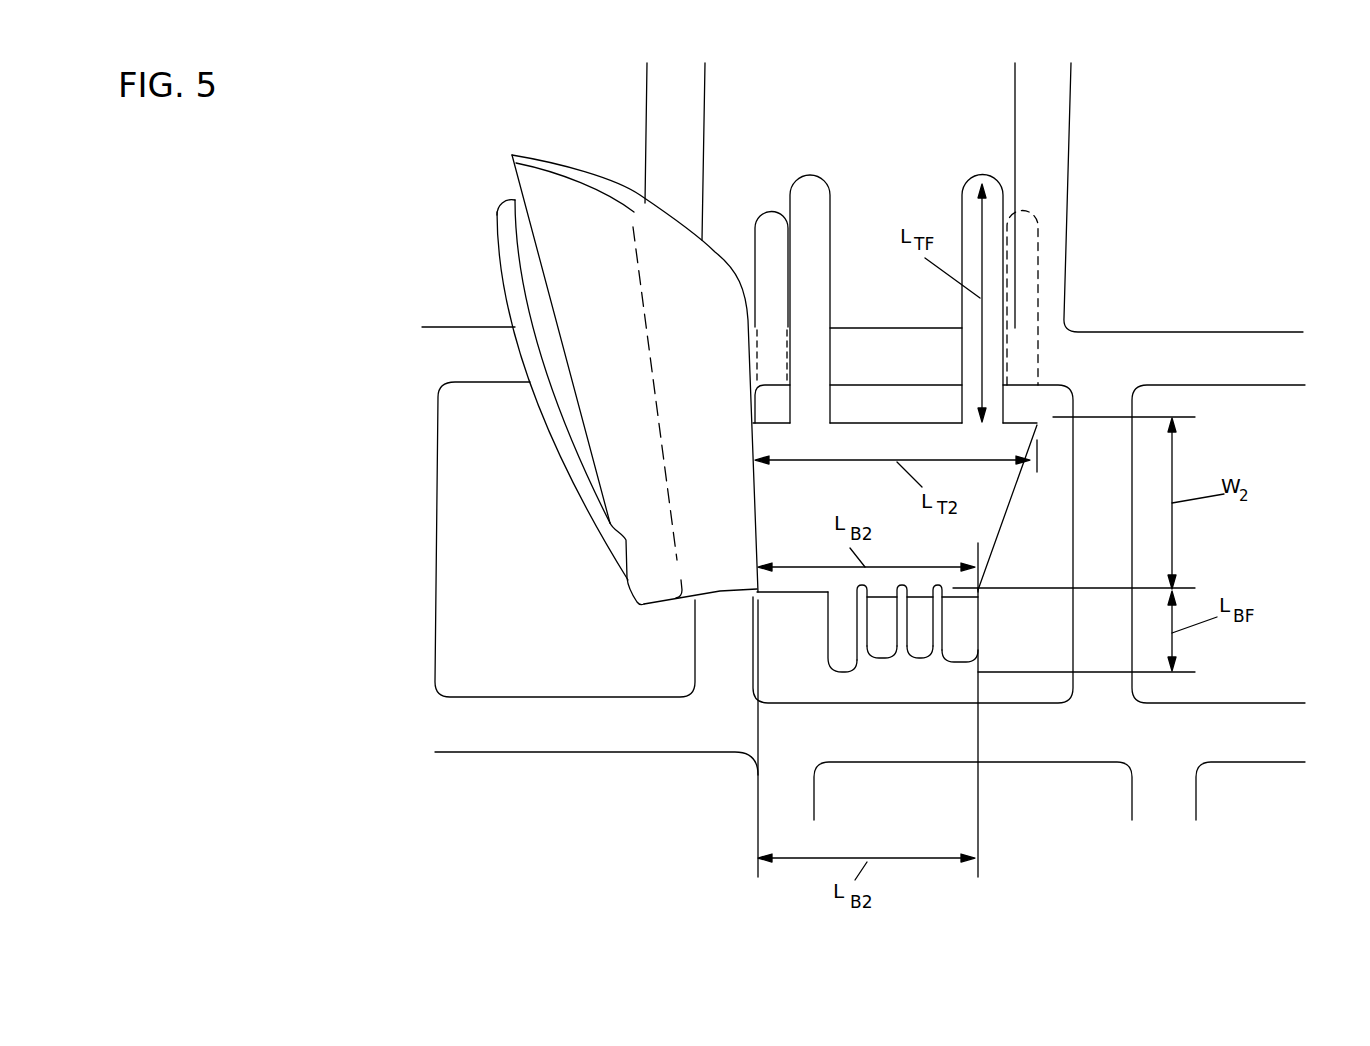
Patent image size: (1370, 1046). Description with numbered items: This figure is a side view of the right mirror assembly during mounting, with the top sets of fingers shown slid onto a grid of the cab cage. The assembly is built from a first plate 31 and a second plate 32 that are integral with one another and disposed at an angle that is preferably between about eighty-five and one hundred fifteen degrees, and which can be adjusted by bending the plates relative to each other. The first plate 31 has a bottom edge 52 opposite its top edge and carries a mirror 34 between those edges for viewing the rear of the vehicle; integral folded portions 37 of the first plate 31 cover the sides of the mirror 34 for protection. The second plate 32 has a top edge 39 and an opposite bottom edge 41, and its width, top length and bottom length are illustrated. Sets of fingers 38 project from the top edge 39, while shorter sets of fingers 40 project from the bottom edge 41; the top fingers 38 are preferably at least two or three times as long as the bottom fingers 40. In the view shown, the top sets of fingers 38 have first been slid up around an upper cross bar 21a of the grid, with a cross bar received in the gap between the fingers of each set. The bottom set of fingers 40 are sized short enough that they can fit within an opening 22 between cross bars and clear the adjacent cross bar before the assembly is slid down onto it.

The opening 22 is at (883, 98).
The folded portion 37 is at (570, 167).
The top set of fingers 38 is at (810, 187).
The upper cross bar 21a is at (870, 363).
The top edge 39 is at (863, 423).
The mirror 34 is at (592, 515).
The first plate 31 is at (700, 548).
The bottom edge 52 is at (703, 597).
The second plate 32 is at (810, 577).
The bottom edge 41 is at (790, 588).
The bottom set of fingers 40 is at (960, 642).